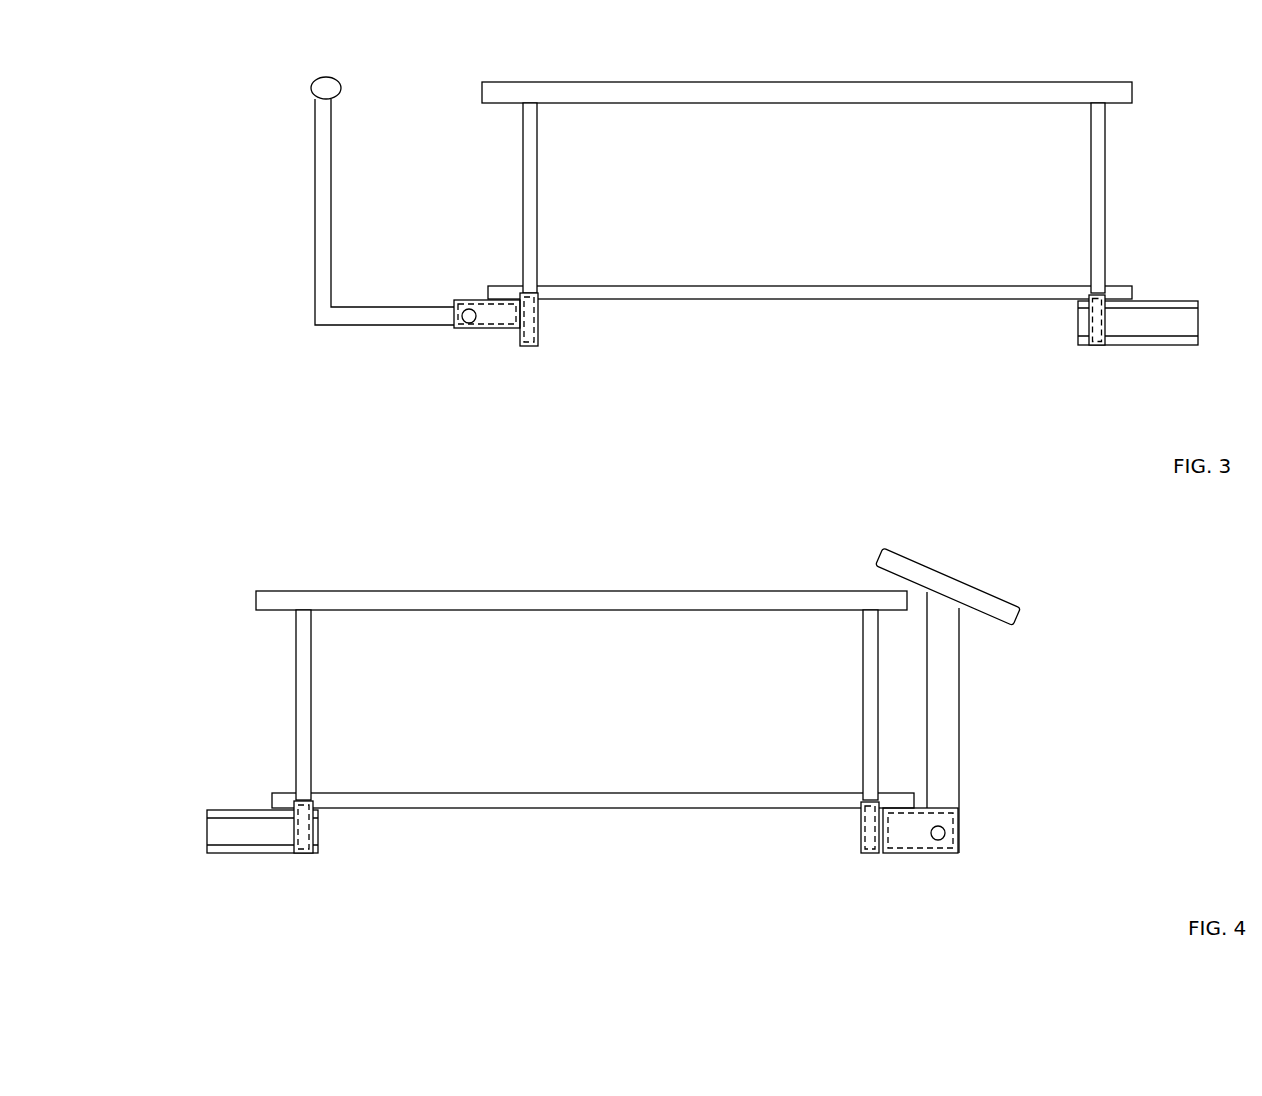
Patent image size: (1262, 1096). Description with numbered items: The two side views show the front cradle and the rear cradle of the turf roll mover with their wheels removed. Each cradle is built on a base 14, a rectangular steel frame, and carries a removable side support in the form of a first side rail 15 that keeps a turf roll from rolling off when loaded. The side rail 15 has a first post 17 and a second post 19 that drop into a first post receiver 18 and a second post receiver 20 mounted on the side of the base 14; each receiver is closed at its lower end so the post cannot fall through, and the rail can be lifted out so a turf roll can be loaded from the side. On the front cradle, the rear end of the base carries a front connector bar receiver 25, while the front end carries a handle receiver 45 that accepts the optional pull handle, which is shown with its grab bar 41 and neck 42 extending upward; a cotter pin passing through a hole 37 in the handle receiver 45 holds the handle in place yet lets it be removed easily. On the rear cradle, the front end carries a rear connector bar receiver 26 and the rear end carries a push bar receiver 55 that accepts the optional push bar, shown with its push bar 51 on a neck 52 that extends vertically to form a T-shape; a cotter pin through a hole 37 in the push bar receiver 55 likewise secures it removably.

In FIG. 3, the base 14 is at (772, 296).
In FIG. 4, the base 14 is at (300, 853).
In FIG. 3, the first side rail 15 is at (927, 92).
In FIG. 4, the first side rail 15 is at (595, 597).
In FIG. 3, the first post 17 is at (524, 212).
In FIG. 4, the first post 17 is at (295, 717).
In FIG. 3, the first post receiver 18 is at (520, 343).
In FIG. 4, the first post receiver 18 is at (540, 805).
In FIG. 3, the second post 19 is at (1097, 188).
In FIG. 4, the second post 19 is at (866, 707).
In FIG. 3, the second post receiver 20 is at (1090, 313).
In FIG. 4, the second post receiver 20 is at (866, 823).
In FIG. 3, the front connector bar receiver 25 is at (1163, 317).
In FIG. 4, the rear connector bar receiver 26 is at (230, 833).
In FIG. 3, the hole 37 is at (468, 316).
In FIG. 4, the hole 37 is at (948, 835).
In FIG. 3, the grab bar 41 is at (313, 88).
In FIG. 3, the neck 42 is at (315, 227).
In FIG. 3, the handle receiver 45 is at (497, 318).
In FIG. 4, the push bar 51 is at (1003, 595).
In FIG. 4, the neck 52 is at (960, 678).
In FIG. 4, the push bar receiver 55 is at (932, 807).